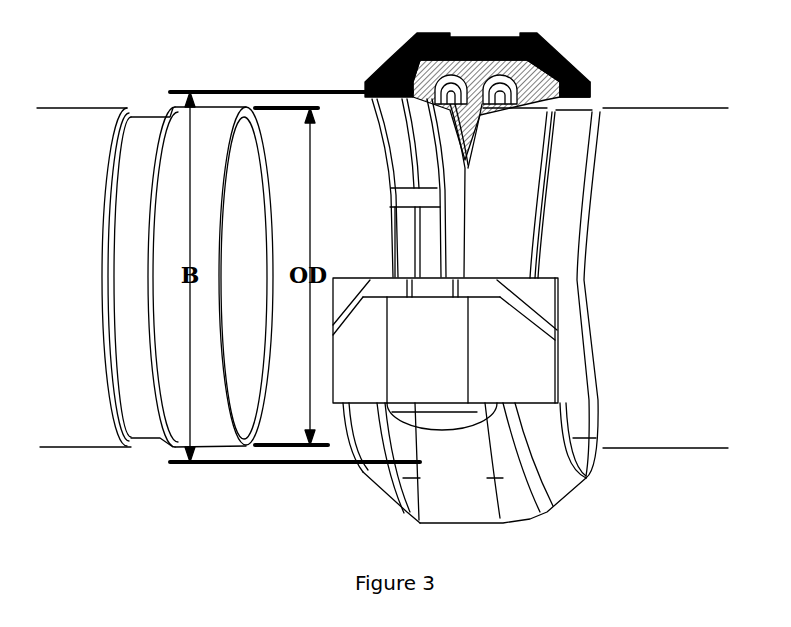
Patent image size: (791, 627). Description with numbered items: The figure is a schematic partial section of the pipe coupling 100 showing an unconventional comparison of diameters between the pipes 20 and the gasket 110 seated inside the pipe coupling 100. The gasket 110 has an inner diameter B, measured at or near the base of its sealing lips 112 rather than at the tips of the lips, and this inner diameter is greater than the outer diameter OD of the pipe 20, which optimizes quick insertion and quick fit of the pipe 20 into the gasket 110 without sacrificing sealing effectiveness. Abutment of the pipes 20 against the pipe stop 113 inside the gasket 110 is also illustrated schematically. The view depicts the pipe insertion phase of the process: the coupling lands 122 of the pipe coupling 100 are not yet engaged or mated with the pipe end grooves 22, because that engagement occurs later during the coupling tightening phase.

The pipe 20 is at (92, 108).
The pipe end groove 22 is at (148, 438).
The pipe coupling 100 is at (563, 497).
The gasket 110 is at (514, 119).
The sealing lips 112 is at (438, 78).
The pipe stop 113 is at (420, 70).
The coupling lands 122 is at (592, 96).